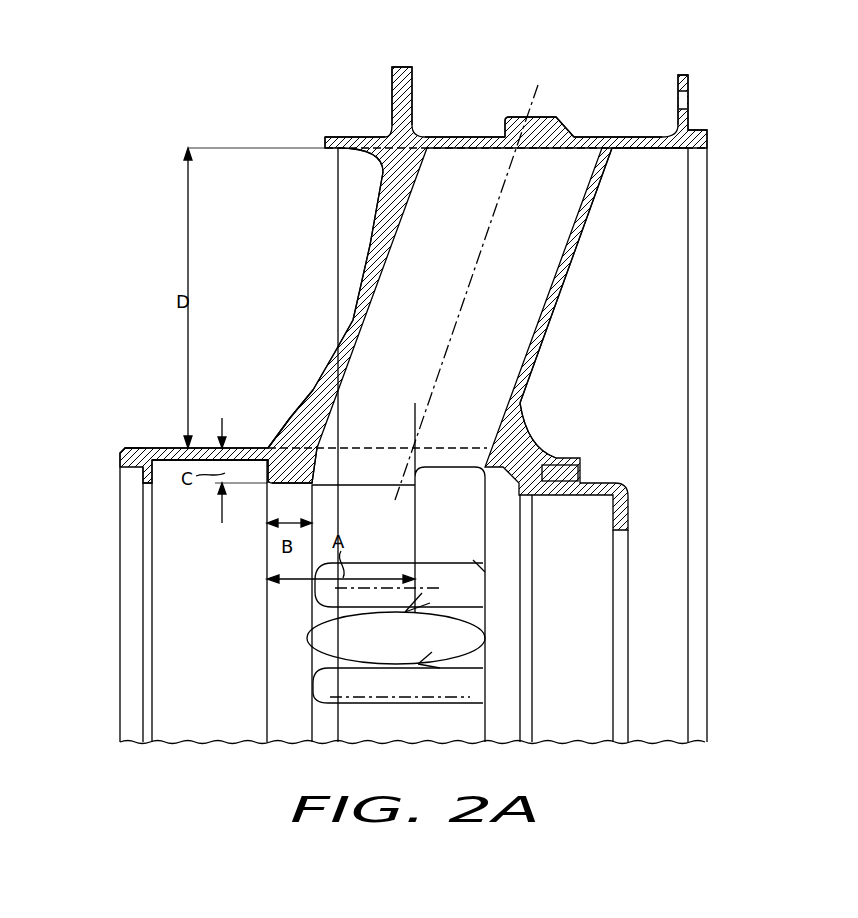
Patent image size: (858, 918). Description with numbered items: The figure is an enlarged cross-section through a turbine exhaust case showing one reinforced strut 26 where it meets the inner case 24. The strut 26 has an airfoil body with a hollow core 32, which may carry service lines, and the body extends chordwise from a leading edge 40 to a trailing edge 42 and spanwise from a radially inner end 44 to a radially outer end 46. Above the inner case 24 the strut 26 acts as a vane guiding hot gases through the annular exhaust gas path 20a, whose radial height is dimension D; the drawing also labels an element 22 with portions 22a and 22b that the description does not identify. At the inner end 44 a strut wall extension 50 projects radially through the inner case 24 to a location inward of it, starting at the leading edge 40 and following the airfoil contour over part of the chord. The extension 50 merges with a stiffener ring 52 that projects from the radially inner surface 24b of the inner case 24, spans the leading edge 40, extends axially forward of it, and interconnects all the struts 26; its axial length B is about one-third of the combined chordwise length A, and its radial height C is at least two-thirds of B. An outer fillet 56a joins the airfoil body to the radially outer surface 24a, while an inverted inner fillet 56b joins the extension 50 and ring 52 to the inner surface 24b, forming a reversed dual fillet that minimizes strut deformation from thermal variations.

The exhaust gas path 20a is at (283, 266).
The first flange 22 is at (353, 137).
The flange outer tab 22a is at (660, 148).
The flange tab 22b is at (413, 72).
The inner case 24 is at (160, 440).
The radially outer surface of the inner case 24a is at (143, 447).
The radially inner surface of the inner case 24b is at (170, 461).
The strut 26 is at (590, 288).
The hollow core 32 is at (572, 167).
The leading edge 40 is at (372, 265).
The trailing edge 42 is at (538, 343).
The radially inner end 44 is at (532, 432).
The radially outer end 46 is at (616, 163).
The strut wall extension 50 is at (369, 491).
The stiffener ring 52 is at (287, 477).
The outer fillet 56a is at (282, 442).
The inner fillet 56b is at (265, 462).